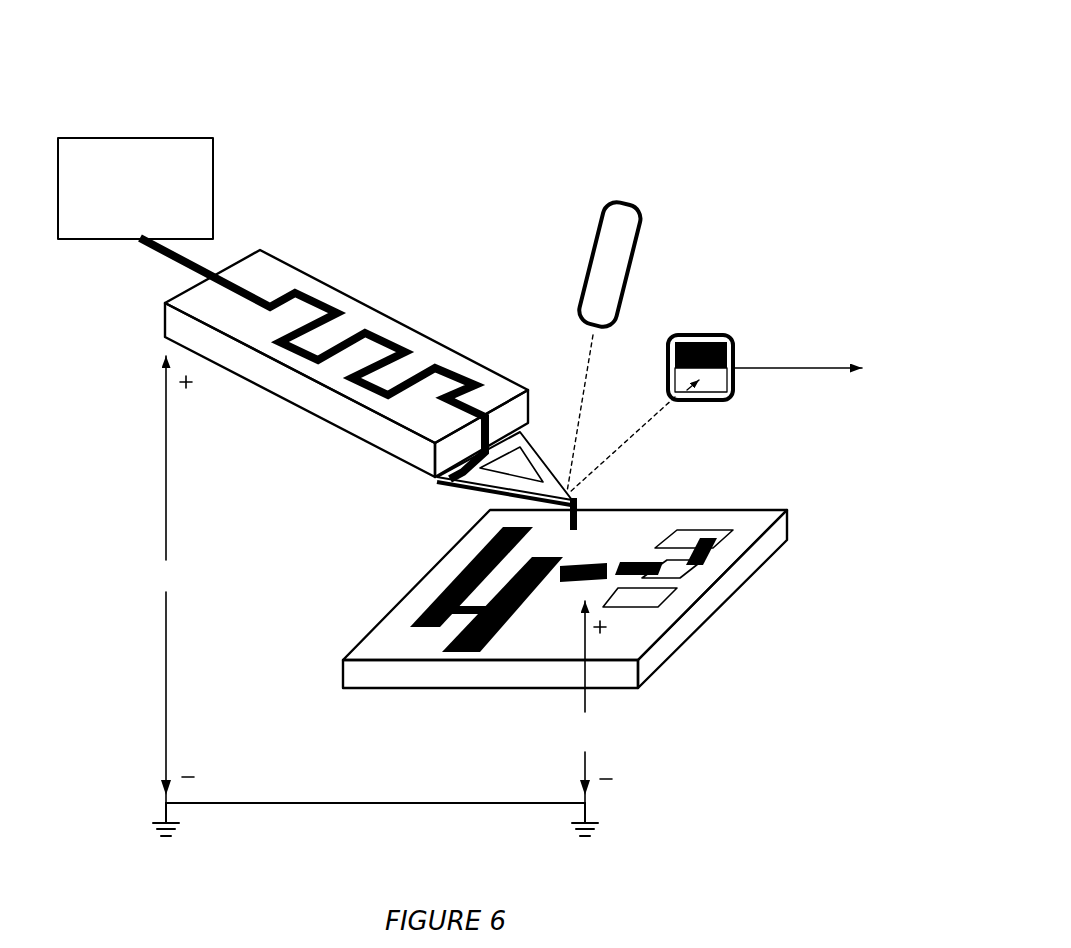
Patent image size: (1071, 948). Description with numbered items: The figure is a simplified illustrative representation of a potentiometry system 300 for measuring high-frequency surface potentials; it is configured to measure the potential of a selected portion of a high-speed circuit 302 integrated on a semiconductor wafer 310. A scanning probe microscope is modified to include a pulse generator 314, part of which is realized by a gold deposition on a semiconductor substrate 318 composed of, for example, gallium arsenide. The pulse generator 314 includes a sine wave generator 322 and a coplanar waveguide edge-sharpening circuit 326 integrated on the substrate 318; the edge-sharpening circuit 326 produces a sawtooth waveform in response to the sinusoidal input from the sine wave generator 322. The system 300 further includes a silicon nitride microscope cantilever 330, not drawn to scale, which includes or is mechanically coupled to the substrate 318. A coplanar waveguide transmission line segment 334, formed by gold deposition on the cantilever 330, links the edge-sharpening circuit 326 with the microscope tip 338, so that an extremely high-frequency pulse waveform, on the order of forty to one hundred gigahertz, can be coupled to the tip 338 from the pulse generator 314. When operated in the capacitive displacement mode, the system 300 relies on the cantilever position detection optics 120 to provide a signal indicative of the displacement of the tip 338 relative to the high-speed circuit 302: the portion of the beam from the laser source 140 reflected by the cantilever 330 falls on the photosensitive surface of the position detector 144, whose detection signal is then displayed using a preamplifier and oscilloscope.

The potentiometry system 300 is at (652, 94).
The cantilever position detection optics 120 is at (755, 241).
The laser source 140 is at (628, 227).
The position detector 144 is at (733, 352).
The sine wave generator 322 is at (197, 177).
The pulse generator 314 is at (132, 312).
The semiconductor substrate 318 is at (323, 441).
The coplanar waveguide edge-sharpening circuit 326 is at (424, 350).
The microscope cantilever 330 is at (522, 428).
The coplanar waveguide transmission line segment 334 is at (466, 482).
The microscope tip 338 is at (586, 518).
The high-speed circuit 302 is at (744, 528).
The semiconductor wafer 310 is at (678, 640).